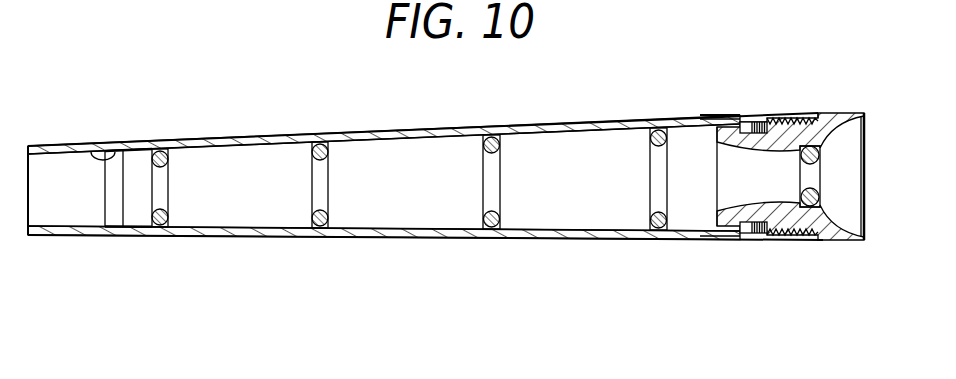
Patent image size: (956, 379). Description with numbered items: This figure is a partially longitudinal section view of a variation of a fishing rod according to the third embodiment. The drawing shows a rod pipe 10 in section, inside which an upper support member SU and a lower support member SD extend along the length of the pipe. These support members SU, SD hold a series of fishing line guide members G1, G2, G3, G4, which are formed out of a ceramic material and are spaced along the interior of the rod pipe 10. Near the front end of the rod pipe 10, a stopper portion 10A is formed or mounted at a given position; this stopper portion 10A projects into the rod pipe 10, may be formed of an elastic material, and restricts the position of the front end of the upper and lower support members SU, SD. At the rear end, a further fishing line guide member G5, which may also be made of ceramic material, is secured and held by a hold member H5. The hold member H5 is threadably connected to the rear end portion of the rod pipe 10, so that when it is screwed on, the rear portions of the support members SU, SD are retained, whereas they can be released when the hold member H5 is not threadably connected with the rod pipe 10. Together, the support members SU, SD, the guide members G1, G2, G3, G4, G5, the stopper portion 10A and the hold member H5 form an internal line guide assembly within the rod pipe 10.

The rod pipe 10 is at (446, 178).
The stopper portion 10A is at (91, 150).
The fishing line guide member G1 is at (159, 149).
The fishing line guide member G2 is at (320, 142).
The fishing line guide member G3 is at (493, 138).
The fishing line guide member G4 is at (658, 129).
The fishing line guide member G5 is at (808, 148).
The upper support member SU is at (373, 140).
The lower support member SD is at (407, 240).
The hold member H5 is at (840, 223).